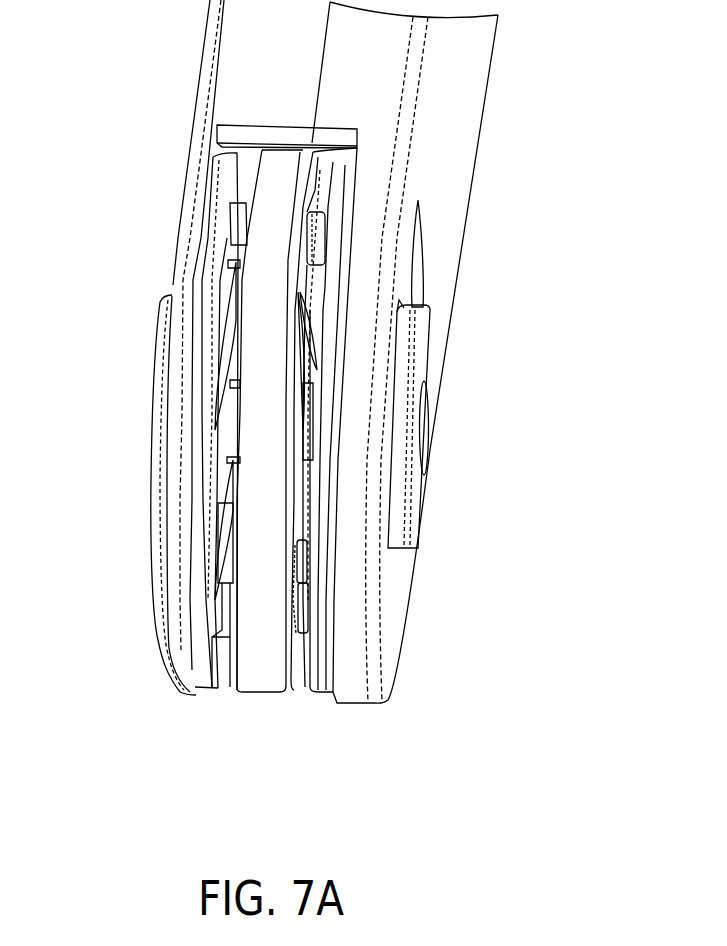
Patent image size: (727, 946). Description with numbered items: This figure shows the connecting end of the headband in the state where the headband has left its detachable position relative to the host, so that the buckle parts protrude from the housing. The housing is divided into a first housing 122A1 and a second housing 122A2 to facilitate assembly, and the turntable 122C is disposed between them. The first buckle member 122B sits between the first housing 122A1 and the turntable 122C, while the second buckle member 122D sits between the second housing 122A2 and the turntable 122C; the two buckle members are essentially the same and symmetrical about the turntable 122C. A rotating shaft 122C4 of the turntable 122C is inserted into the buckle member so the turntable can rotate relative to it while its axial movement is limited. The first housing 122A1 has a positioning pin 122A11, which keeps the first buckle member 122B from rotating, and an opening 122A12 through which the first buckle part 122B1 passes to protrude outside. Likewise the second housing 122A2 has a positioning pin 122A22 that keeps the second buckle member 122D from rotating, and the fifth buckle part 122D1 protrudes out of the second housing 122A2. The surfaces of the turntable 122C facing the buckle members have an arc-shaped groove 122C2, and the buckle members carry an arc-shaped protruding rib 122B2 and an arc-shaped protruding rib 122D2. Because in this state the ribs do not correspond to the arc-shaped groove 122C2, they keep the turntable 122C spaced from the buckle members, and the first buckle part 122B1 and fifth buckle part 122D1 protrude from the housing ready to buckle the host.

The first housing 122A1 is at (468, 125).
The second housing 122A2 is at (208, 70).
The positioning pin 122A11 is at (315, 227).
The opening 122A12 is at (399, 302).
The positioning pin 122A22 is at (235, 246).
The first buckle member 122B is at (428, 452).
The first buckle part 122B1 is at (481, 374).
The arc-shaped protruding rib 122B2 is at (312, 283).
The turntable 122C is at (370, 466).
The arc-shaped groove 122C2 is at (292, 587).
The rotating shaft 122C4 is at (230, 434).
The second buckle member 122D is at (135, 454).
The fifth buckle part 122D1 is at (158, 408).
The arc-shaped protruding rib 122D2 is at (232, 298).